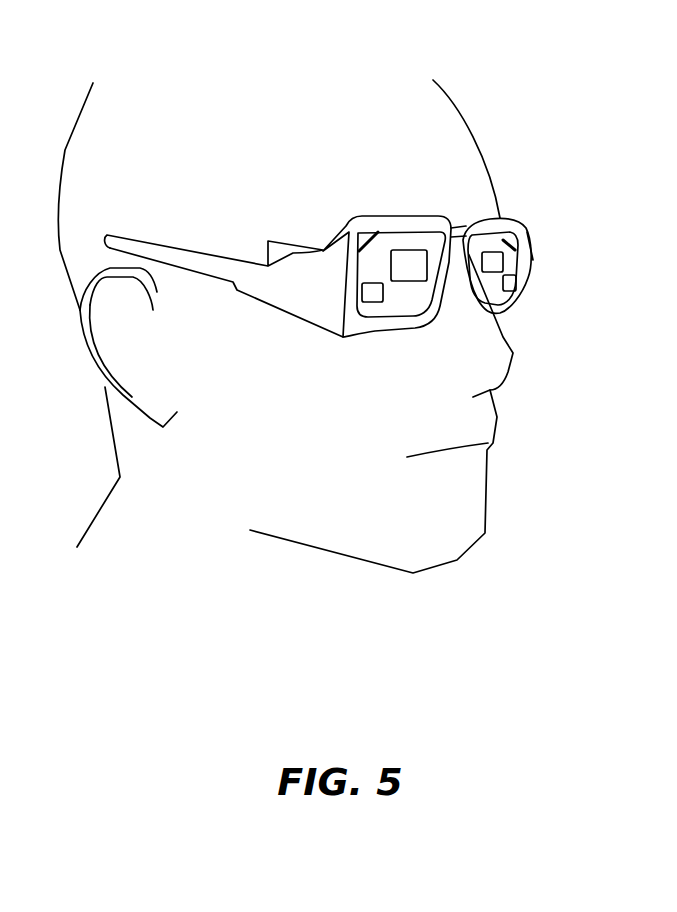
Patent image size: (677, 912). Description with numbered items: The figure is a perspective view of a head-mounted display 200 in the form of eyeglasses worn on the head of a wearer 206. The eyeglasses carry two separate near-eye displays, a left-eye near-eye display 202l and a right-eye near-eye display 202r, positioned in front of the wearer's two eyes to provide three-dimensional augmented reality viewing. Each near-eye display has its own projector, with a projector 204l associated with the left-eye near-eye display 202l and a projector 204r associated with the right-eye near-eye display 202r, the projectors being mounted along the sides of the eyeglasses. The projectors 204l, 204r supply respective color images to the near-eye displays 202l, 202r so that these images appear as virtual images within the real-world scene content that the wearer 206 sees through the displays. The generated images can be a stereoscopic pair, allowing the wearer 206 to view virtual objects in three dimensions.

The head-mounted display 200 is at (369, 227).
The right-eye near-eye display 202r is at (400, 300).
The left-eye near-eye display 202l is at (508, 257).
The projector 204r is at (273, 240).
The projector 204l is at (533, 261).
The wearer 206 is at (62, 99).